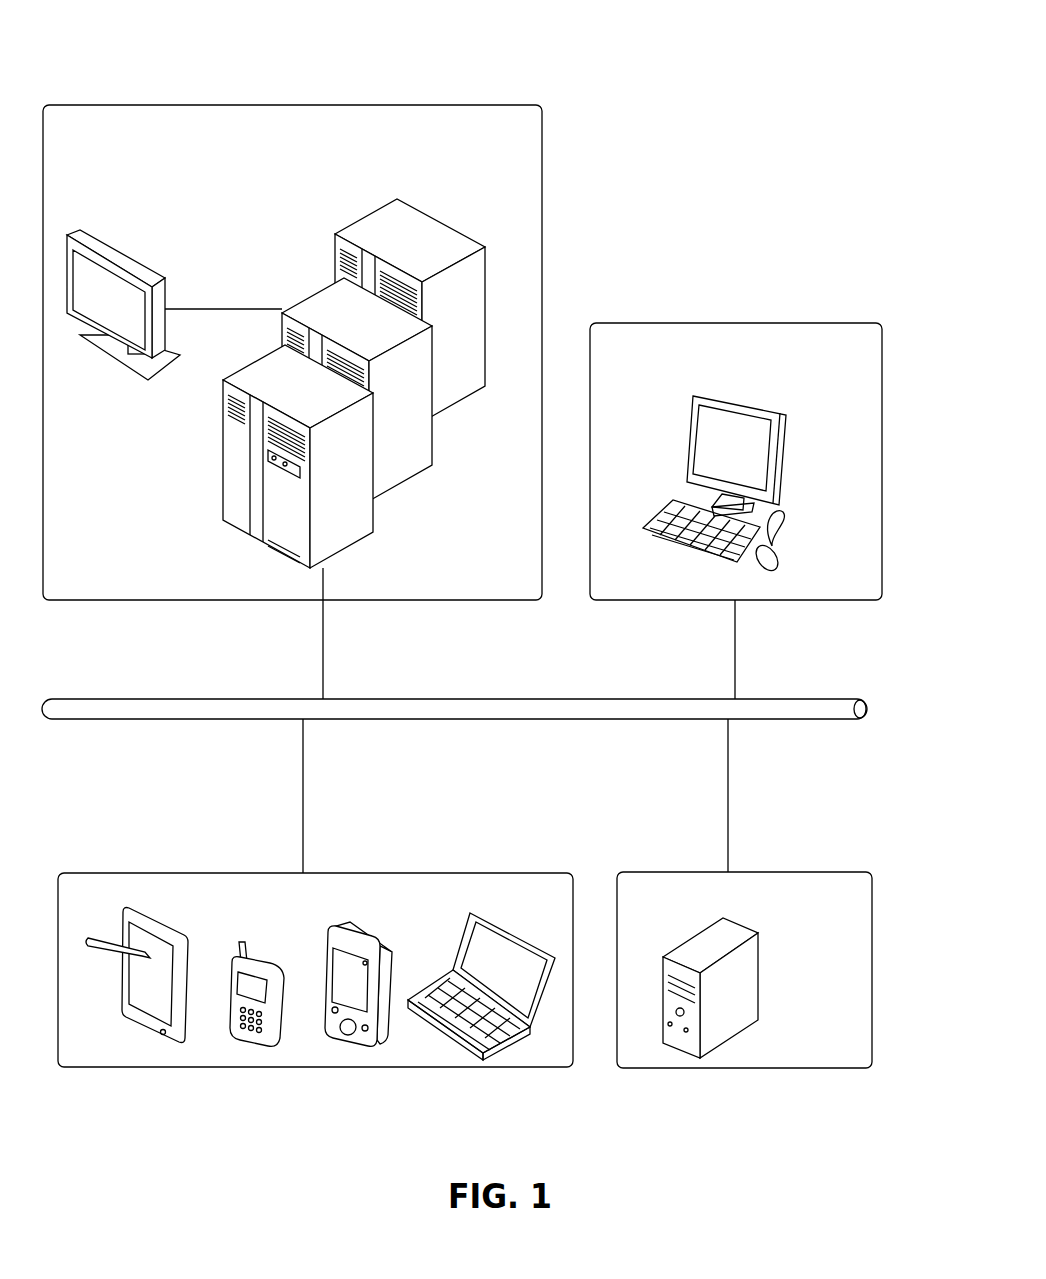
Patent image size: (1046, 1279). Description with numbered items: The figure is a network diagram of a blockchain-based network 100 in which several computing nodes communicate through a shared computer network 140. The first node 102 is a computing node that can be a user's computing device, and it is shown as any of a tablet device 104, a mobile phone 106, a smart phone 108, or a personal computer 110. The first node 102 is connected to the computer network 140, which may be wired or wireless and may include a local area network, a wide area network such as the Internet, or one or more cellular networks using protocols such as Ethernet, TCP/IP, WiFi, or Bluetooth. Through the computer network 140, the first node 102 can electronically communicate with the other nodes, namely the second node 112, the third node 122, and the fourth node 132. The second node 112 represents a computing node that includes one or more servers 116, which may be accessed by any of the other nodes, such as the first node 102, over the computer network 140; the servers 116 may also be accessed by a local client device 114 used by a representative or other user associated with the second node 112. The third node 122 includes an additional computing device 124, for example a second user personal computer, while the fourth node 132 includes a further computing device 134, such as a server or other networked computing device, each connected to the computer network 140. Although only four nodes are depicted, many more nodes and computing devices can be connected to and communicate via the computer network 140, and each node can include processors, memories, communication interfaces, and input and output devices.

The blockchain-based network 100 is at (708, 34).
The Node 1 102 is at (496, 872).
The tablet device 104 is at (177, 1046).
The mobile phone 106 is at (265, 1047).
The smart phone 108 is at (365, 1048).
The personal computer 110 is at (467, 1053).
The Node 2 112 is at (426, 104).
The local client device 114 is at (131, 253).
The server(s) 116 is at (456, 226).
The Node 3 122 is at (724, 323).
The additional computing device 124 is at (690, 430).
The Node 4 132 is at (804, 872).
The further computing device 134 is at (720, 1046).
The computer network 140 is at (559, 698).